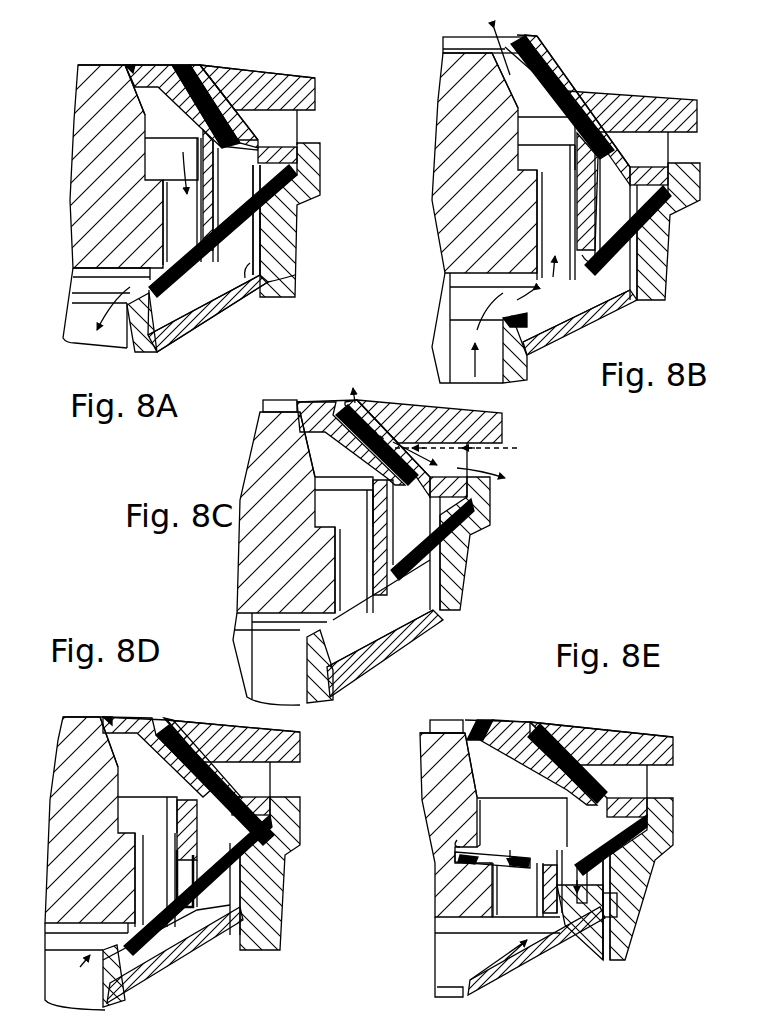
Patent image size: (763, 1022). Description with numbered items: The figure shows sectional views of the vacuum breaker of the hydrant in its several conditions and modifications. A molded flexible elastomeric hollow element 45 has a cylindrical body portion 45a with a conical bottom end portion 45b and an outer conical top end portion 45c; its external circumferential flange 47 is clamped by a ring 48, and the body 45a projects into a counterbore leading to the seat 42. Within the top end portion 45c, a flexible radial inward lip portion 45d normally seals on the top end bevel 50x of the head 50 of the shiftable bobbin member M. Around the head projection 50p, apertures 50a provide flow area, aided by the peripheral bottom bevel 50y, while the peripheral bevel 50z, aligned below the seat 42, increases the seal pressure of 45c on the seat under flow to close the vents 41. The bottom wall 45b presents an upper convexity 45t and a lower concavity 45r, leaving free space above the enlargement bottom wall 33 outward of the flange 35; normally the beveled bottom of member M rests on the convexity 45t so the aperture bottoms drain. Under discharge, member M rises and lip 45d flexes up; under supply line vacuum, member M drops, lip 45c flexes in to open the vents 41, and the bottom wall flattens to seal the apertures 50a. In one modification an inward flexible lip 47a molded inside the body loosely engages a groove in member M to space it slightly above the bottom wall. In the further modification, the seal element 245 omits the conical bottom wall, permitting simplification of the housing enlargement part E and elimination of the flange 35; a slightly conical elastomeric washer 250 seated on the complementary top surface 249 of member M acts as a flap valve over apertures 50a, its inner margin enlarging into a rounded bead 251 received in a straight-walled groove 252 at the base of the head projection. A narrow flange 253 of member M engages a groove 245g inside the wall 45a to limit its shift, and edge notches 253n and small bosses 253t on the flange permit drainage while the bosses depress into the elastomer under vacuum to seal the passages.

In FIG. 8A, the shiftable member M is at (93, 45).
In FIG. 8B, the shiftable member M is at (434, 98).
In FIG. 8C, the shiftable member M is at (253, 462).
In FIG. 8D, the shiftable member M is at (60, 733).
In FIG. 8E, the shiftable member M is at (417, 778).
In FIG. 8A, the housing enlargement part E is at (288, 293).
In FIG. 8E, the housing enlargement part E is at (625, 922).
In FIG. 8A, the enlargement bottom wall 33 is at (190, 333).
In FIG. 8A, the axial flange 35 is at (127, 318).
In FIG. 8D, the axial flange 35 is at (97, 967).
In FIG. 8A, the vents 41 is at (345, 109).
In FIG. 8B, the vents 41 is at (674, 155).
In FIG. 8C, the vents 41 is at (446, 439).
In FIG. 8D, the vents 41 is at (304, 778).
In FIG. 8E, the vents 41 is at (654, 785).
In FIG. 8A, the seat 42 is at (211, 98).
In FIG. 8B, the seat 42 is at (576, 108).
In FIG. 8A, the elastomeric hollow element 45 is at (178, 63).
In FIG. 8B, the elastomeric hollow element 45 is at (634, 232).
In FIG. 8C, the elastomeric hollow element 45 is at (434, 552).
In FIG. 8D, the elastomeric hollow element 45 is at (159, 698).
In FIG. 8A, the cylindrical body portion 45a is at (262, 220).
In FIG. 8E, the cylindrical body portion 45a is at (611, 863).
In FIG. 8A, the bottom end portion 45b is at (262, 280).
In FIG. 8B, the bottom end portion 45b is at (600, 312).
In FIG. 8C, the bottom end portion 45b is at (440, 619).
In FIG. 8A, the outer conical end portion 45c is at (218, 75).
In FIG. 8B, the outer conical end portion 45c is at (598, 92).
In FIG. 8C, the outer conical end portion 45c is at (367, 413).
In FIG. 8A, the flexible radial inward lip portion 45d is at (150, 63).
In FIG. 8B, the flexible radial inward lip portion 45d is at (580, 58).
In FIG. 8C, the flexible radial inward lip portion 45d is at (338, 412).
In FIG. 8A, the bottom surface concavity 45r is at (217, 320).
In FIG. 8A, the convexity 45t is at (235, 307).
In FIG. 8A, the external circumferential flange 47 is at (287, 200).
In FIG. 8B, the external circumferential flange 47 is at (668, 231).
In FIG. 8C, the external circumferential flange 47 is at (465, 543).
In FIG. 8D, the external circumferential flange 47 is at (286, 833).
In FIG. 8E, the external circumferential flange 47 is at (658, 828).
In FIG. 8D, the inward circumferential flexible lip 47a is at (243, 863).
In FIG. 8A, the ring 48 is at (288, 150).
In FIG. 8B, the ring 48 is at (649, 176).
In FIG. 8C, the ring 48 is at (448, 487).
In FIG. 8D, the ring 48 is at (272, 789).
In FIG. 8E, the ring 48 is at (644, 797).
In FIG. 8A, the head 50 is at (118, 176).
In FIG. 8B, the head 50 is at (478, 166).
In FIG. 8C, the head 50 is at (289, 533).
In FIG. 8D, the head 50 is at (98, 853).
In FIG. 8E, the head 50 is at (463, 830).
In FIG. 8A, the apertures 50a is at (196, 214).
In FIG. 8B, the apertures 50a is at (571, 211).
In FIG. 8C, the apertures 50a is at (366, 572).
In FIG. 8D, the apertures 50a is at (164, 869).
In FIG. 8E, the apertures 50a is at (528, 897).
In FIG. 8A, the head projection 50p is at (84, 122).
In FIG. 8B, the head projection 50p is at (446, 183).
In FIG. 8C, the head projection 50p is at (303, 456).
In FIG. 8D, the head projection 50p is at (120, 781).
In FIG. 8E, the head projection 50p is at (478, 785).
In FIG. 8A, the top end bevel 50x is at (126, 67).
In FIG. 8B, the top end bevel 50x is at (483, 47).
In FIG. 8C, the top end bevel 50x is at (300, 413).
In FIG. 8E, the top end bevel 50x is at (470, 743).
In FIG. 8A, the peripheral bottom bevel 50y is at (251, 266).
In FIG. 8B, the peripheral bottom bevel 50y is at (583, 258).
In FIG. 8A, the peripheral bevel 50z is at (163, 186).
In FIG. 8E, the hollow elastomeric seal element 245 is at (498, 718).
In FIG. 8E, the circumferential groove 245g is at (612, 903).
In FIG. 8E, the top surface 249 is at (438, 890).
In FIG. 8E, the elastomeric washer 250 is at (523, 838).
In FIG. 8E, the rounded bead 251 is at (481, 818).
In FIG. 8E, the circumferential groove 252 is at (458, 845).
In FIG. 8E, the outward circumferential narrow flange 253 is at (567, 853).
In FIG. 8E, the edge notches 253n is at (598, 877).
In FIG. 8E, the bosses 253t is at (592, 947).